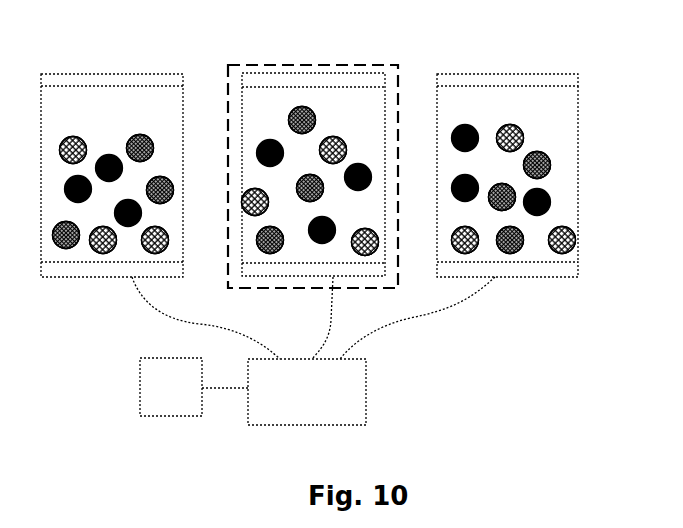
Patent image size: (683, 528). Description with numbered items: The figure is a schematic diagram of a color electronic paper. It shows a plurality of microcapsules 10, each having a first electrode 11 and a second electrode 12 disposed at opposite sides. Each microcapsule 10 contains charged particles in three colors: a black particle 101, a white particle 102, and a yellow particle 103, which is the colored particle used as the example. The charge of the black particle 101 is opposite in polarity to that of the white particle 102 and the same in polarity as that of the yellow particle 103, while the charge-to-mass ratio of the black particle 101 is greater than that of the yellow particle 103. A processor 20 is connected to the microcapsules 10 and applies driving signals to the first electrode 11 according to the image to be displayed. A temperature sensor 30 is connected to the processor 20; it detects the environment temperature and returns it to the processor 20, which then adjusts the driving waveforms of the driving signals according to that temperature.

The microcapsule 10 is at (356, 65).
The first electrode 11 is at (557, 270).
The second electrode 12 is at (562, 78).
The black particle 101 is at (551, 198).
The white particle 102 is at (576, 240).
The yellow particle 103 is at (540, 151).
The processor 20 is at (366, 389).
The temperature sensor 30 is at (140, 384).